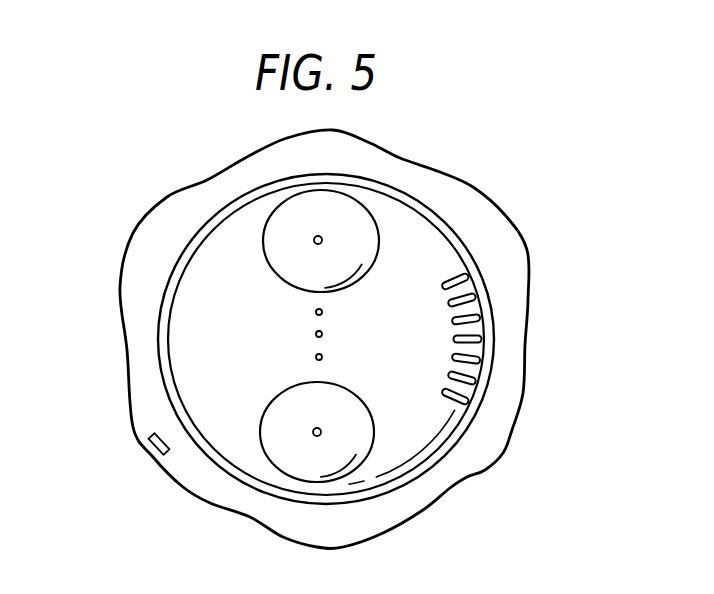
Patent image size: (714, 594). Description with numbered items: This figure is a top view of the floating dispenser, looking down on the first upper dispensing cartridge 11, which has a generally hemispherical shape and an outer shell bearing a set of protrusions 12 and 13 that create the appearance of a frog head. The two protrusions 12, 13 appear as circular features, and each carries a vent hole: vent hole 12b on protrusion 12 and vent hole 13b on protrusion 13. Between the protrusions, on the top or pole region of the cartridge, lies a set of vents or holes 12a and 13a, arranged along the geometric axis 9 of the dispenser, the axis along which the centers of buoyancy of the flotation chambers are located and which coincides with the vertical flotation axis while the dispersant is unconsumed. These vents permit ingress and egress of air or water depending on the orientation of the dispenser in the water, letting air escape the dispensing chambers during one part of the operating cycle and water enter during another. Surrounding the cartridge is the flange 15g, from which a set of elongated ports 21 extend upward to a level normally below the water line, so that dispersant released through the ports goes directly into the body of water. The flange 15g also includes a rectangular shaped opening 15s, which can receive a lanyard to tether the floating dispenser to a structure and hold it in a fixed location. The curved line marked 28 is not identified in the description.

The geometric axis 9 is at (316, 334).
The first upper dispensing cartridge 11 is at (412, 237).
The protrusion 12 is at (347, 447).
The vent hole 12a is at (316, 359).
The vent hole 12b is at (314, 434).
The protrusion 13 is at (353, 208).
The vent hole 13a is at (316, 311).
The vent hole 13b is at (315, 238).
The flange 15g is at (482, 208).
The rectangular shaped opening 15s is at (150, 445).
The elongated ports 21 is at (490, 310).
The rib 28 is at (387, 340).